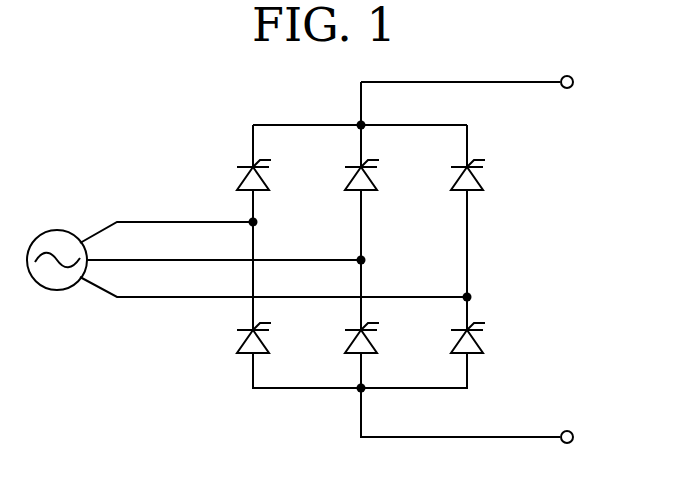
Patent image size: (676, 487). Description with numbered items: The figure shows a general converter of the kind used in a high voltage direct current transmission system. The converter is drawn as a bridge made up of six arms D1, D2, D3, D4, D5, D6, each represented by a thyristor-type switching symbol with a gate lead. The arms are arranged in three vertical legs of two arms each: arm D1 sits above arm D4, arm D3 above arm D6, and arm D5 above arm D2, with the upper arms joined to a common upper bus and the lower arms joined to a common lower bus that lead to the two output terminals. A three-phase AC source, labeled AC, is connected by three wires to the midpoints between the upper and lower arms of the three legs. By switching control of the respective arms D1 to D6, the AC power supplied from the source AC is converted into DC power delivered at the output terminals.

The AC power AC is at (247, 273).
The arm D1 is at (270, 176).
The arm D2 is at (484, 339).
The arm D3 is at (378, 176).
The arm D4 is at (270, 339).
The arm D5 is at (484, 176).
The arm D6 is at (378, 339).